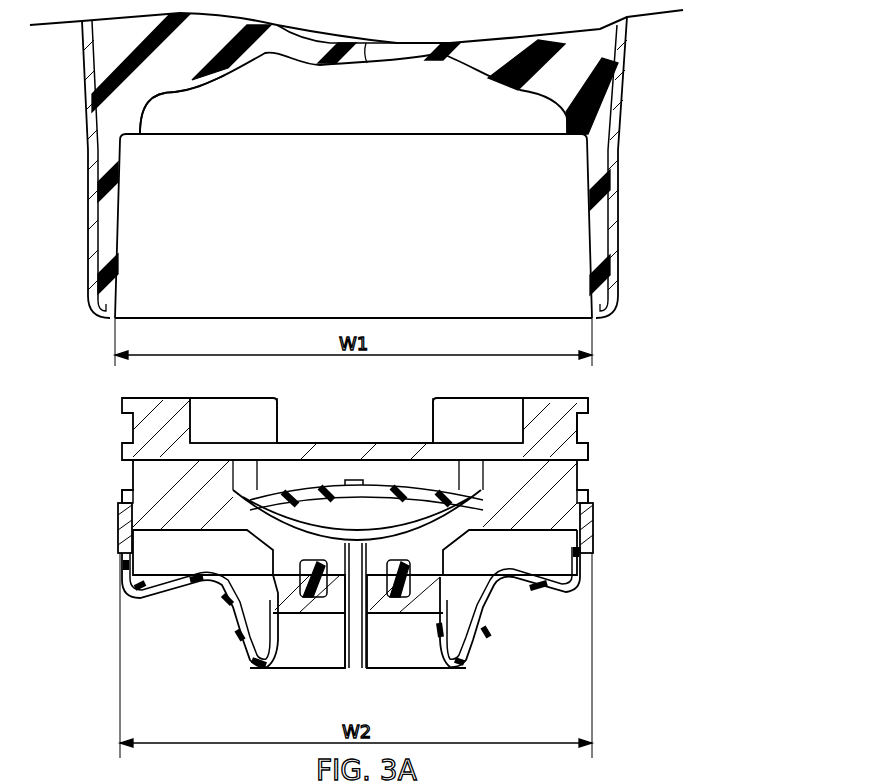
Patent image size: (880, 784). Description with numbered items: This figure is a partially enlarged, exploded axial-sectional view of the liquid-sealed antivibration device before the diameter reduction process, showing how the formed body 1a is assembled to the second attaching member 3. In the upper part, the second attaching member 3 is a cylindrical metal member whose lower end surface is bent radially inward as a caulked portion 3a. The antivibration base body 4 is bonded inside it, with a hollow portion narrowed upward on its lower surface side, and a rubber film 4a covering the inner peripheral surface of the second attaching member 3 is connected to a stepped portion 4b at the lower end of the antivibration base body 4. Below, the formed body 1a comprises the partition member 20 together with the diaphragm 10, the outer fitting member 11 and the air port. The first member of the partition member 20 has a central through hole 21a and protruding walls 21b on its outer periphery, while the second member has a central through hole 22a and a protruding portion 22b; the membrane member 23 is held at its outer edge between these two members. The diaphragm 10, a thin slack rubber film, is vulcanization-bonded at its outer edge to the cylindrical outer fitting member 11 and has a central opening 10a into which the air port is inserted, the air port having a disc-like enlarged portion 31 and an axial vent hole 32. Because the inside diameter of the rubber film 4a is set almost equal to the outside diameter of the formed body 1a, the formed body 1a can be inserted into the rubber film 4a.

The formed body 1a is at (710, 392).
The second attaching member 3 is at (88, 149).
The caulked portion 3a is at (96, 318).
The antivibration base body 4 is at (541, 90).
The rubber film 4a is at (107, 222).
The stepped portion 4b is at (163, 86).
The diaphragm 10 is at (188, 620).
The opening 10a is at (322, 565).
The outer fitting member 11 is at (588, 532).
The partition member 20 is at (90, 436).
The through hole 21a is at (393, 450).
The protruding walls 21b is at (592, 408).
The through hole 22a is at (364, 543).
The protruding portion 22b is at (590, 497).
The membrane member 23 is at (318, 488).
The enlarged portion 31 is at (391, 597).
The vent hole 32 is at (358, 650).